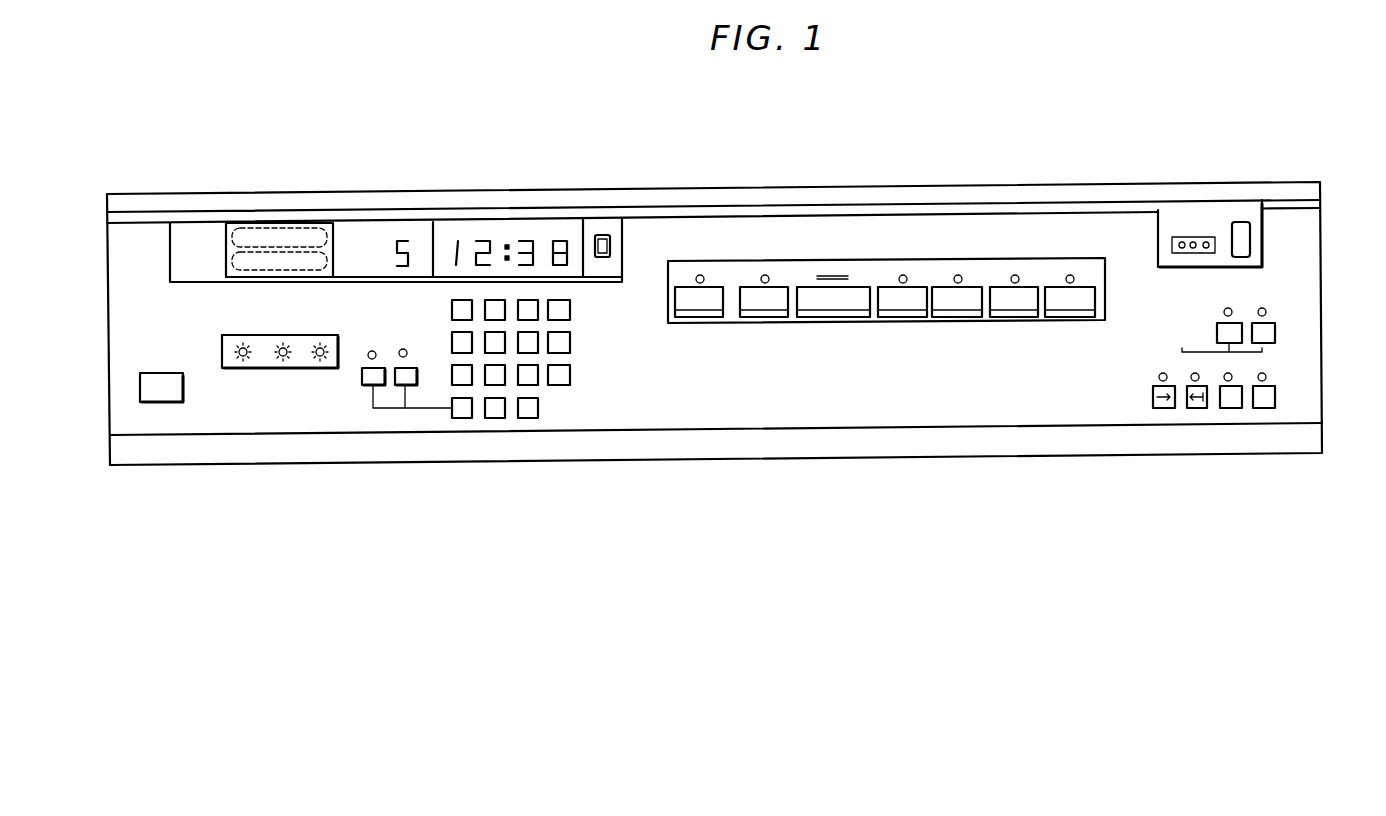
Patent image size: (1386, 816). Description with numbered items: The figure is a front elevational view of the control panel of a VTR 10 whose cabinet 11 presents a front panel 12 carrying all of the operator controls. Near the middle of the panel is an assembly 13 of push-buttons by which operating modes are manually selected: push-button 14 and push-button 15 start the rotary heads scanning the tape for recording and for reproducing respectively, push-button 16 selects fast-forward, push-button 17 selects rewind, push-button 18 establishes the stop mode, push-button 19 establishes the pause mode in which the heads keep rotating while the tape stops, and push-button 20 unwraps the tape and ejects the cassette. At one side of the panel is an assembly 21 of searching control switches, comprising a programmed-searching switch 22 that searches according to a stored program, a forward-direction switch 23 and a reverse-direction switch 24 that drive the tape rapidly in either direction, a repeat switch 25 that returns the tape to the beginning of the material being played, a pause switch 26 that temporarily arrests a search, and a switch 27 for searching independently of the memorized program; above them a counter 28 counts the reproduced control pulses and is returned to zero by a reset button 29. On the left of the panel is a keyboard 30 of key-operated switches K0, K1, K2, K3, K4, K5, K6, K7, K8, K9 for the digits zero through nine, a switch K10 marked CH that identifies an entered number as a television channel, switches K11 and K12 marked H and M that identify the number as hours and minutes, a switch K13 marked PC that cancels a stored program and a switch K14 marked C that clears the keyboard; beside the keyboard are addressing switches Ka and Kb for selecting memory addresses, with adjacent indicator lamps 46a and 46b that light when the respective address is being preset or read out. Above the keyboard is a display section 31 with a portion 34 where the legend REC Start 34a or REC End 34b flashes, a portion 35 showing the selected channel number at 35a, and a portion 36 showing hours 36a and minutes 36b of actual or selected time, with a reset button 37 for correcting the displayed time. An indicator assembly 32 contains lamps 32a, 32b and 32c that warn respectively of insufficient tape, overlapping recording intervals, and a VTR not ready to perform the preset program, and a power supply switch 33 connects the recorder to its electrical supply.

The VTR 10 is at (1055, 166).
The cabinet 11 is at (1112, 181).
The front panel 12 is at (1072, 400).
The assembly of push-buttons 13 is at (886, 266).
The push-button 14 is at (1015, 300).
The push-button 15 is at (905, 303).
The push-button 16 is at (962, 303).
The push-button 17 is at (763, 303).
The push-button 18 is at (832, 303).
The push-button 19 is at (1070, 303).
The push-button 20 is at (693, 303).
The assembly of searching control switches 21 is at (1256, 394).
The programmed-searching switch 22 is at (1218, 325).
The forward-direction switch 23 is at (1168, 408).
The reverse-direction switch 24 is at (1202, 408).
The repeat switch 25 is at (1230, 408).
The pause switch 26 is at (1263, 408).
The switch 27 is at (1276, 323).
The counter 28 is at (1172, 245).
The reset button 29 is at (1242, 228).
The keyboard 30 is at (524, 388).
The display section 31 is at (460, 243).
The indicator assembly 32 is at (283, 365).
The indicator lamp 32a is at (321, 347).
The indicator lamp 32b is at (283, 347).
The indicator lamp 32c is at (243, 347).
The power supply switch 33 is at (165, 402).
The portion of display section 34 is at (233, 223).
The REC Start legend 34a is at (314, 223).
The REC End legend 34b is at (270, 272).
The portion of display section 35 is at (383, 223).
The television channel number display 35a is at (476, 170).
The portion of display section 36 is at (560, 238).
The hours display 36a is at (533, 219).
The minutes display 36b is at (566, 218).
The reset button 37 is at (606, 236).
The indicator lamp 46a is at (368, 355).
The indicator lamp 46b is at (407, 350).
The key-operated addressing switch Ka is at (368, 386).
The key-operated addressing switch Kb is at (416, 386).
The key-operated switch K0 is at (530, 418).
The key-operated switch K1 is at (452, 369).
The key-operated switch K2 is at (485, 380).
The key-operated switch K3 is at (537, 383).
The key-operated switch K4 is at (452, 344).
The key-operated switch K5 is at (485, 332).
The key-operated switch K6 is at (538, 332).
The key-operated switch K7 is at (456, 300).
The key-operated switch K8 is at (505, 300).
The key-operated switch K9 is at (546, 293).
The key-operated switch K10 is at (567, 300).
The key-operated switch K11 is at (570, 345).
The key-operated switch K12 is at (570, 372).
The key-operated switch K13 is at (465, 418).
The key-operated switch K14 is at (495, 418).